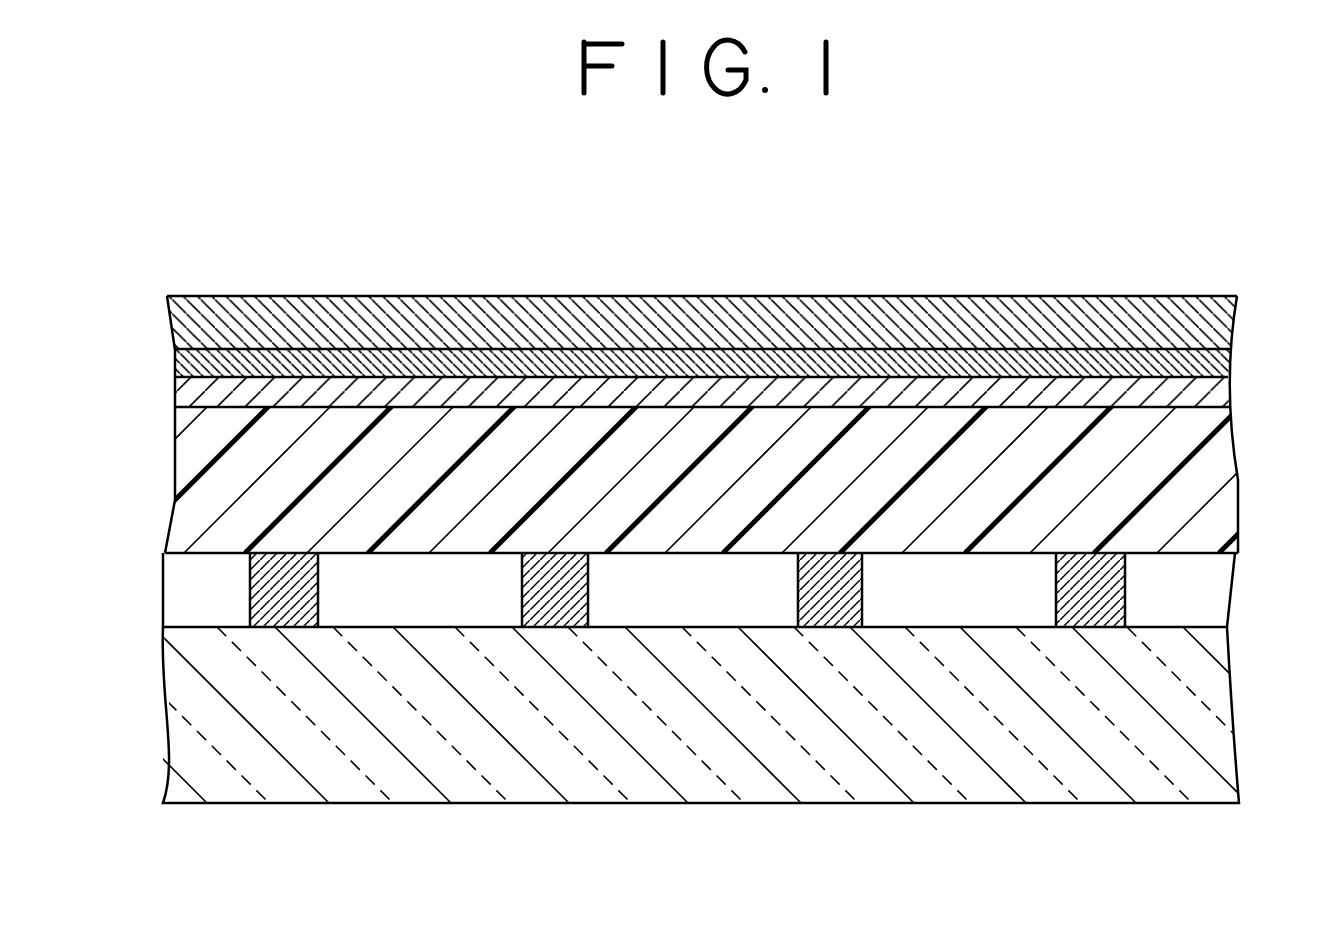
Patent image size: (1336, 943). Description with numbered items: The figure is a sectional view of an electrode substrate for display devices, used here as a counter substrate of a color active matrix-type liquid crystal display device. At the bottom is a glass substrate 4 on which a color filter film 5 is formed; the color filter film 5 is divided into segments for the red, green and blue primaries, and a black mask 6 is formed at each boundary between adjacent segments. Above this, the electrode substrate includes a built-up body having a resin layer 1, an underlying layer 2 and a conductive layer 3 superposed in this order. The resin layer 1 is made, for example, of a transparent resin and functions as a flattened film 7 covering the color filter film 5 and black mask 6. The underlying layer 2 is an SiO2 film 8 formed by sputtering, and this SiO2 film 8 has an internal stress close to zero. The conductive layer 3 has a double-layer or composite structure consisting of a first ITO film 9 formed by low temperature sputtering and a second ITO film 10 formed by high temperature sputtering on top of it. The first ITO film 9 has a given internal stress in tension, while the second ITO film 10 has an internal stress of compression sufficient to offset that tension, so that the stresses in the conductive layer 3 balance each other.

The resin layer 1 is at (683, 549).
The underlying layer 2 is at (706, 390).
The conductive layer 3 is at (706, 302).
The glass substrate 4 is at (683, 715).
The color filter film 5 is at (1214, 597).
The black mask 6 is at (275, 617).
The flattened film 7 is at (186, 471).
The SiO2 film 8 is at (184, 390).
The first ITO film 9 is at (184, 358).
The second ITO film 10 is at (413, 314).